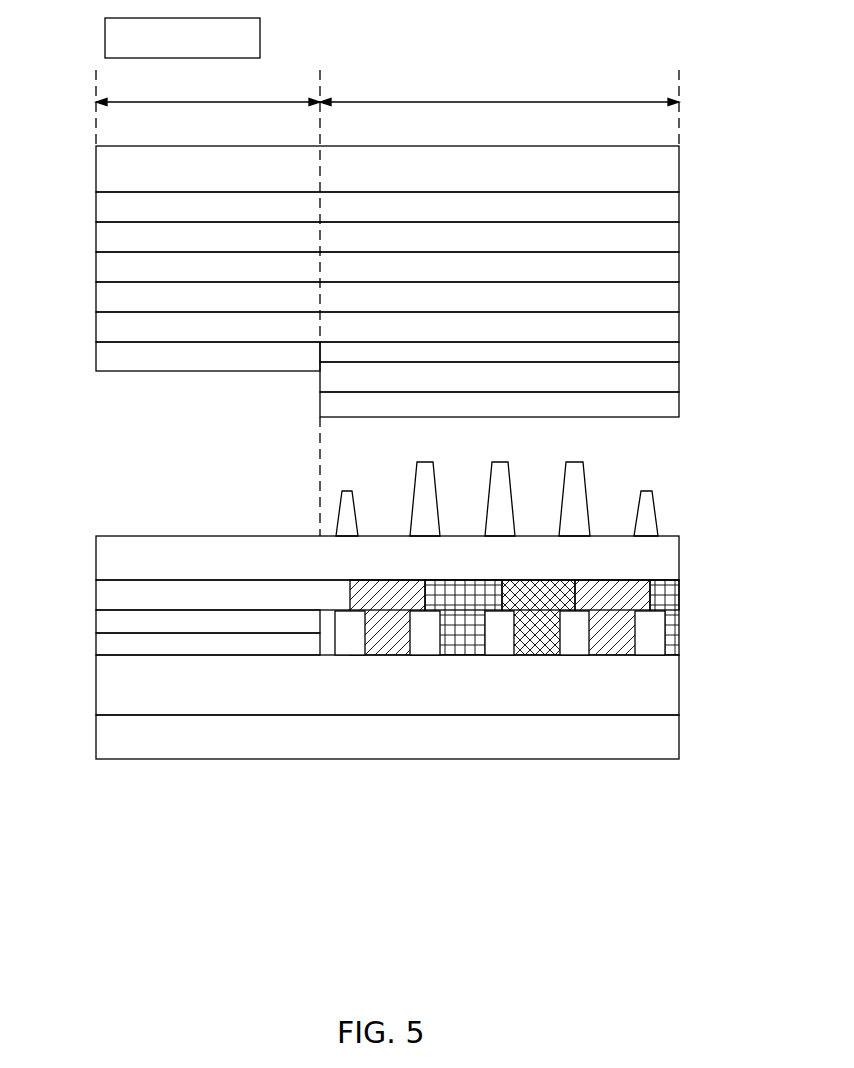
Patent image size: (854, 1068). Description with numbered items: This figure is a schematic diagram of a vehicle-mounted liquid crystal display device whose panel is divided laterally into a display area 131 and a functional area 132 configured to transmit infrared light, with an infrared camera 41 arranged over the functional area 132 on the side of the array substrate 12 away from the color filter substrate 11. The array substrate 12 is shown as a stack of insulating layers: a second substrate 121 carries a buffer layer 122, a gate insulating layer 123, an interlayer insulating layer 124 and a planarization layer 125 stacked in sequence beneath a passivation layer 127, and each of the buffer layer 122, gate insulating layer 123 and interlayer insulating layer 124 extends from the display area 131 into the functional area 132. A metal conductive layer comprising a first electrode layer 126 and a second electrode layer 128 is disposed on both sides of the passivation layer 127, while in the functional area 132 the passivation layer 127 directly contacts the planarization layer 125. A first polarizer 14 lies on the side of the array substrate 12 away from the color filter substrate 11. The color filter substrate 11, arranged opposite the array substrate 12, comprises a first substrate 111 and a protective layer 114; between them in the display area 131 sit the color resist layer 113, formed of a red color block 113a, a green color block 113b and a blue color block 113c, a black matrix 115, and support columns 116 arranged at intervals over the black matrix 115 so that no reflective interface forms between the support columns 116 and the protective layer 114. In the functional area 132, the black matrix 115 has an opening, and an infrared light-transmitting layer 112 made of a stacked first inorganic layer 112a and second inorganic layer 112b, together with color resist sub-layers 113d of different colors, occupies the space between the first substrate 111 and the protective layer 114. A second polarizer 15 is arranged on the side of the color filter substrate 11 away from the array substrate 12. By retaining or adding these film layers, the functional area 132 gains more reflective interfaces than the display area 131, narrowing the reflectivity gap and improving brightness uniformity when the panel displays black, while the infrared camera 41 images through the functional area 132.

The infrared camera 41 is at (245, 42).
The display area 131 is at (499, 303).
The functional area 132 is at (208, 107).
The first polarizer 14 is at (643, 176).
The array substrate 12 is at (384, 591).
The second substrate 121 is at (643, 206).
The buffer layer 122 is at (643, 239).
The gate insulating layer 123 is at (643, 269).
The interlayer insulating layer 124 is at (643, 299).
The planarization layer 125 is at (645, 329).
The first electrode layer 126 is at (645, 358).
The passivation layer 127 is at (648, 383).
The second electrode layer 128 is at (648, 408).
The color filter substrate 11 is at (381, 707).
The first substrate 111 is at (108, 684).
The infrared light-transmitting layer 112 is at (216, 757).
The first inorganic layer 112a is at (103, 643).
The second inorganic layer 112b is at (103, 620).
The color resist layer 113 is at (353, 759).
The red color block 113a is at (390, 655).
The green color block 113b is at (458, 655).
The blue color block 113c is at (535, 655).
The color resist sub-layers 113d is at (105, 597).
The protective layer 114 is at (100, 556).
The black matrix 115 is at (655, 644).
The support column 116 is at (648, 515).
The second polarizer 15 is at (657, 738).